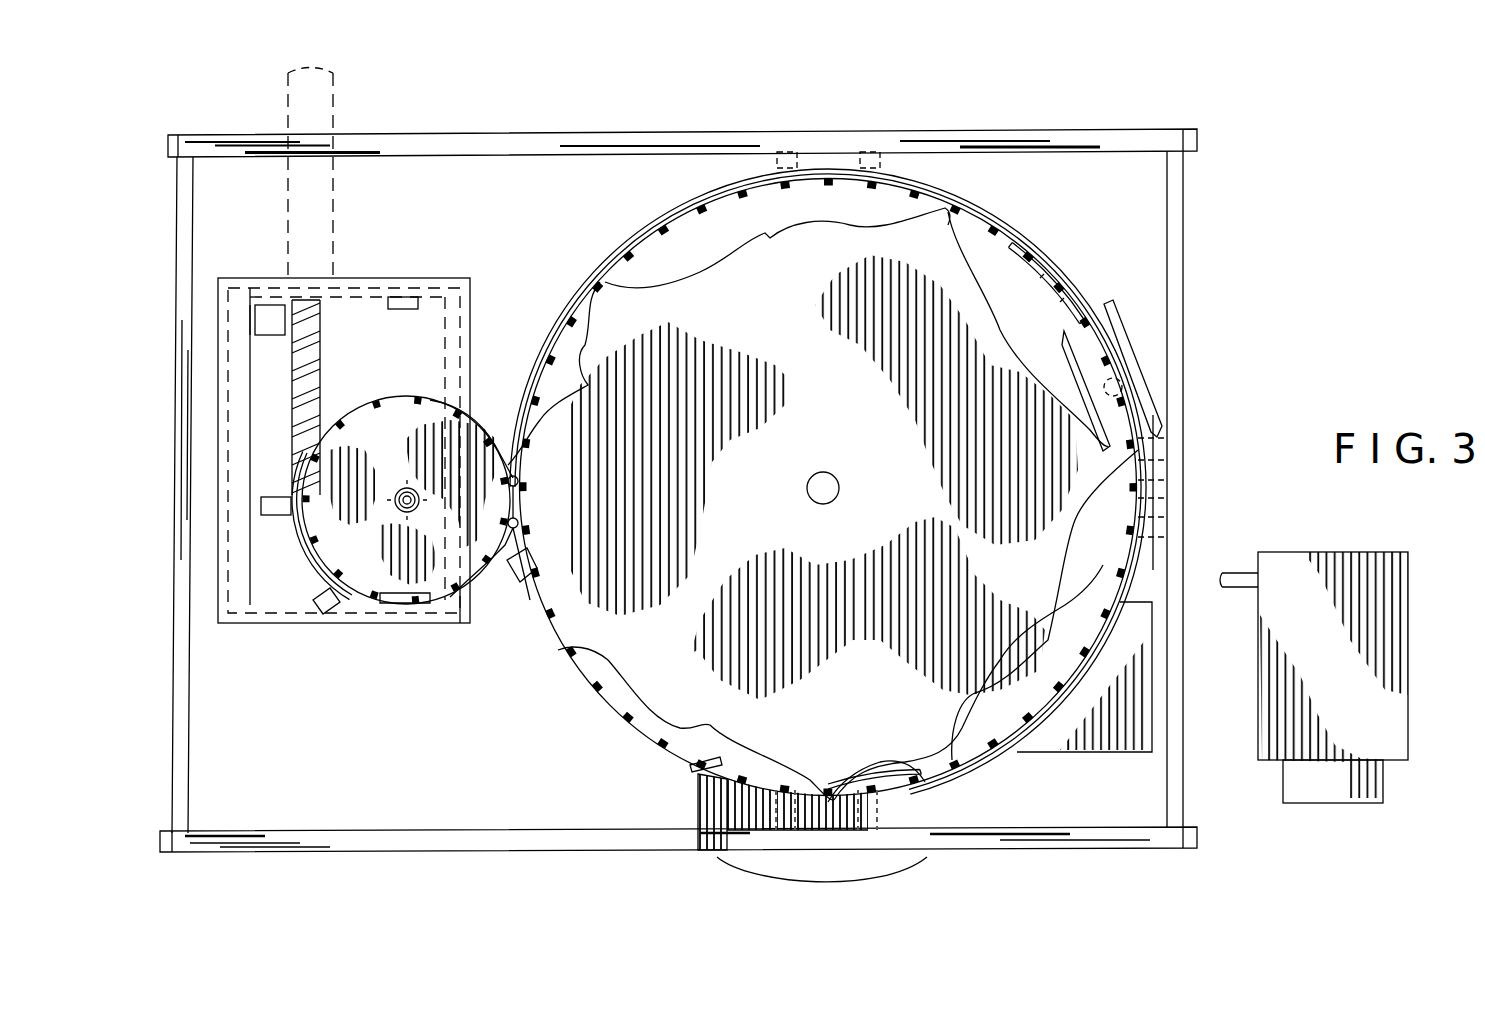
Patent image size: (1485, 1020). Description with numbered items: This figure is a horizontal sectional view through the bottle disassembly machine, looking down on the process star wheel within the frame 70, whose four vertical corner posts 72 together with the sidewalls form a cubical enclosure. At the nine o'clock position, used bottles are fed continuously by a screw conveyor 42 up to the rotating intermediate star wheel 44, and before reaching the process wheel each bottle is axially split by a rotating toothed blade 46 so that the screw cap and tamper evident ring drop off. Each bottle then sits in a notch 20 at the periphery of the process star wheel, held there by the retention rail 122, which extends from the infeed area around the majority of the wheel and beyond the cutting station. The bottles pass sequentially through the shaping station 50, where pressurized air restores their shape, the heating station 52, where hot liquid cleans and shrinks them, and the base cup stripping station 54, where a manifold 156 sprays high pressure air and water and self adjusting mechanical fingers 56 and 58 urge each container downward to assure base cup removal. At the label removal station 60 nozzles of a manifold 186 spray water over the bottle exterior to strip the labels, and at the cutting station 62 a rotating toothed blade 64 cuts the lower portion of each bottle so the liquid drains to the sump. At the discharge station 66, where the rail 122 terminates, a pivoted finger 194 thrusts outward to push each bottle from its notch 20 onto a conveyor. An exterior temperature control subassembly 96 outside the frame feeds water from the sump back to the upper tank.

The notch 20 is at (617, 262).
The screw conveyor 42 is at (292, 413).
The intermediate star wheel 44 is at (480, 400).
The rotating toothed blade 46 is at (410, 606).
The shaping station 50 is at (678, 469).
The heating station 52 is at (791, 249).
The base cup stripping station 54 is at (946, 400).
The mechanical finger 56 is at (1110, 333).
The mechanical finger 58 is at (1110, 370).
The label removal station 60 is at (1014, 619).
The cutting station 62 is at (886, 776).
The rotating toothed blade 64 is at (928, 785).
The discharge station 66 is at (867, 625).
The frame 70 is at (174, 330).
The vertical corner post 72 is at (176, 135).
The exterior temperature control subassembly 96 is at (1400, 627).
The retention rail 122 is at (703, 203).
The manifold 156 is at (1078, 286).
The manifold 186 is at (1125, 642).
The finger 194 is at (693, 780).